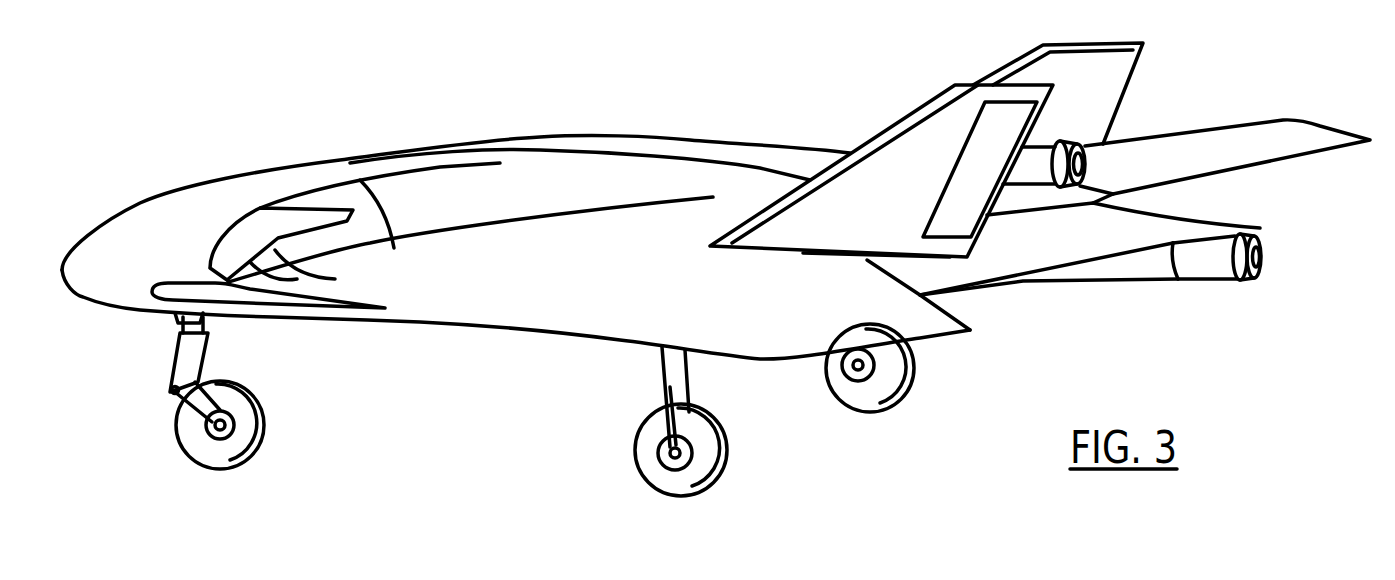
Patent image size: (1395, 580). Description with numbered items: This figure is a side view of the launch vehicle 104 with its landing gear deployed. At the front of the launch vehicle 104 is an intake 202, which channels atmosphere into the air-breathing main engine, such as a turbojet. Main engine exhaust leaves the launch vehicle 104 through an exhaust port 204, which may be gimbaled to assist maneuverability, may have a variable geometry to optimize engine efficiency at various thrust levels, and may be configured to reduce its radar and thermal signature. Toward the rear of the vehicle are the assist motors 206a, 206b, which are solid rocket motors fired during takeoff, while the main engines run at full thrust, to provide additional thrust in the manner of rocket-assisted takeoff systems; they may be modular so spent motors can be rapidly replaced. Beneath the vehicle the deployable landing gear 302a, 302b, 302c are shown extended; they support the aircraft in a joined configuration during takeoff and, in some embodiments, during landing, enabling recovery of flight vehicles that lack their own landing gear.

The launch vehicle 104 is at (437, 146).
The intake 202 is at (270, 222).
The exhaust port 204 is at (1050, 230).
The assist motor 206a is at (1035, 153).
The assist motor 206b is at (1207, 262).
The landing gear 302a is at (172, 385).
The landing gear 302b is at (650, 414).
The landing gear 302c is at (913, 372).